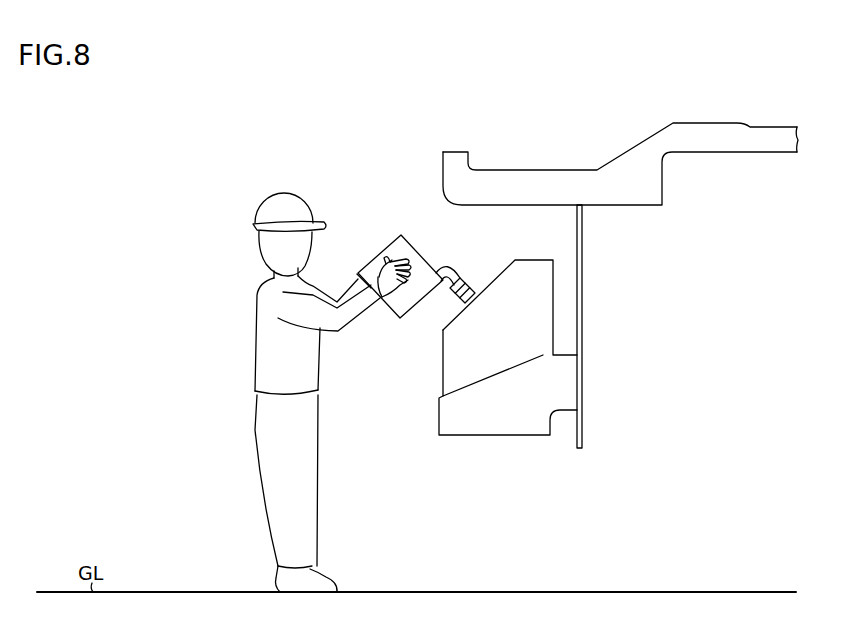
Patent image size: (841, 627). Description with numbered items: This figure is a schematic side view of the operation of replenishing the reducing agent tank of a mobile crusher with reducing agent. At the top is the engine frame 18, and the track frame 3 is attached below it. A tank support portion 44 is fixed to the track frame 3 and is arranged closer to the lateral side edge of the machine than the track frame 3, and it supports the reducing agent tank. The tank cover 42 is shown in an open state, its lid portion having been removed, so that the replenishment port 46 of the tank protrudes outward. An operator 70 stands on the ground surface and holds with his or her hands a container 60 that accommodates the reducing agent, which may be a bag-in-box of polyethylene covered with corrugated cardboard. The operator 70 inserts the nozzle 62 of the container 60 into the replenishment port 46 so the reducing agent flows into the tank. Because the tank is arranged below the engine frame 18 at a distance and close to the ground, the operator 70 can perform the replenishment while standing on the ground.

The engine frame 18 is at (687, 140).
The track frame 3 is at (583, 328).
The tank cover 42 is at (475, 358).
The tank support portion 44 is at (467, 415).
The replenishment port 46 is at (472, 280).
The nozzle 62 is at (447, 270).
The container 60 is at (395, 250).
The operator 70 is at (275, 350).